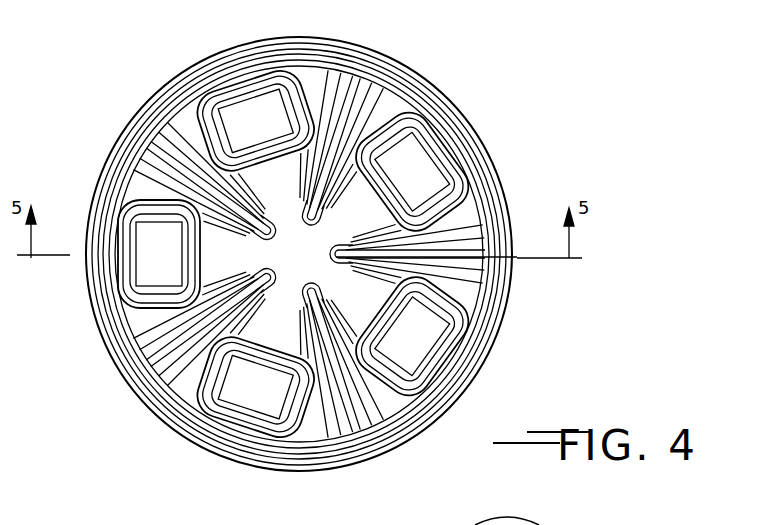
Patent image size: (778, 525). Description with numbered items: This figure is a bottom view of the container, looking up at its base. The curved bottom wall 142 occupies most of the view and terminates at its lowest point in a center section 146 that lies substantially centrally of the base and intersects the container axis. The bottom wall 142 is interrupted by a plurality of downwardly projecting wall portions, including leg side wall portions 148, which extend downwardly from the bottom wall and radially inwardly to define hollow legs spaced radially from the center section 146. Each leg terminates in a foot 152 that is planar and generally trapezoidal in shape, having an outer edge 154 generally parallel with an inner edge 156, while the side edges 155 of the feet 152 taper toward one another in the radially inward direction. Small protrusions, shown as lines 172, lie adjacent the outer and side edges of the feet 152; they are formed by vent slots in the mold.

The bottom wall 142 is at (152, 152).
The center section 146 is at (321, 266).
The leg side wall portions 148 is at (460, 240).
The feet 152 is at (288, 112).
The outer edge 154 is at (255, 112).
The side edges 155 is at (345, 97).
The inner edge 156 is at (274, 168).
The lines 172 is at (232, 100).